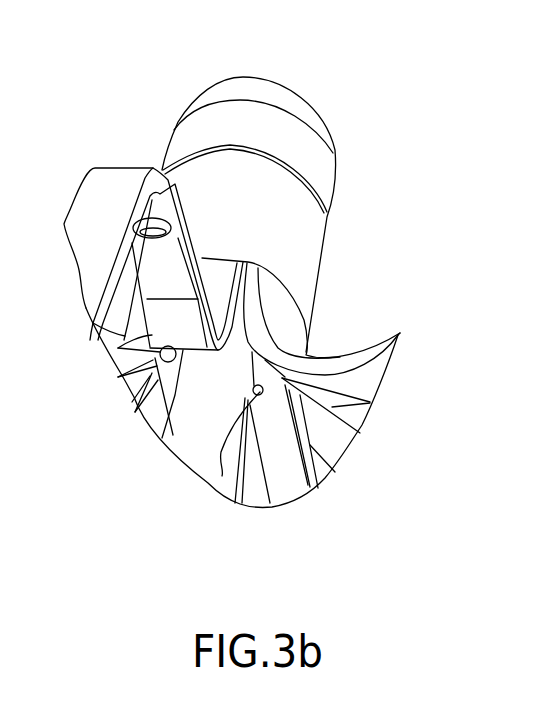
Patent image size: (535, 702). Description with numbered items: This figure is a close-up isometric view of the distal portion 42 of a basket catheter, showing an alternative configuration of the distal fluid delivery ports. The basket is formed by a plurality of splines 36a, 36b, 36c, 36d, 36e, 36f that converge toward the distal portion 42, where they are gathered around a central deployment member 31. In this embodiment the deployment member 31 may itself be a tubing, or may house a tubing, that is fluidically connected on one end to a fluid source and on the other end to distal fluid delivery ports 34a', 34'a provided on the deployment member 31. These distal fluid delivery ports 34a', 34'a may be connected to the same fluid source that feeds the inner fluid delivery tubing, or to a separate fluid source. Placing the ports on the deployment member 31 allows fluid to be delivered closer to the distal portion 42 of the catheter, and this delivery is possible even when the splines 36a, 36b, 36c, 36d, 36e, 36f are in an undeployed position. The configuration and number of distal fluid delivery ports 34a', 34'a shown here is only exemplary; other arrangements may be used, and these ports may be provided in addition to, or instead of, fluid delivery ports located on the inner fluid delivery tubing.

The distal portion 42 is at (313, 90).
The spline 36a is at (107, 173).
The spline 36b is at (350, 362).
The spline 36c is at (345, 432).
The spline 36d is at (273, 493).
The spline 36e is at (135, 412).
The spline 36f is at (118, 348).
The distal fluid delivery port 34a' is at (81, 387).
The distal fluid delivery port 34'a is at (208, 465).
The deployment member 31 is at (193, 428).